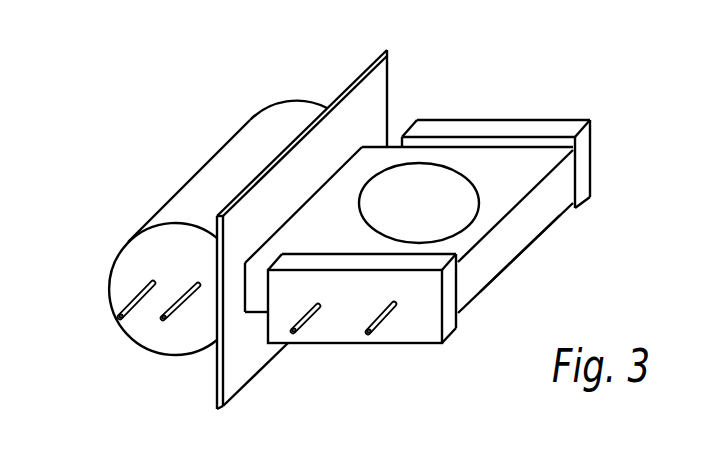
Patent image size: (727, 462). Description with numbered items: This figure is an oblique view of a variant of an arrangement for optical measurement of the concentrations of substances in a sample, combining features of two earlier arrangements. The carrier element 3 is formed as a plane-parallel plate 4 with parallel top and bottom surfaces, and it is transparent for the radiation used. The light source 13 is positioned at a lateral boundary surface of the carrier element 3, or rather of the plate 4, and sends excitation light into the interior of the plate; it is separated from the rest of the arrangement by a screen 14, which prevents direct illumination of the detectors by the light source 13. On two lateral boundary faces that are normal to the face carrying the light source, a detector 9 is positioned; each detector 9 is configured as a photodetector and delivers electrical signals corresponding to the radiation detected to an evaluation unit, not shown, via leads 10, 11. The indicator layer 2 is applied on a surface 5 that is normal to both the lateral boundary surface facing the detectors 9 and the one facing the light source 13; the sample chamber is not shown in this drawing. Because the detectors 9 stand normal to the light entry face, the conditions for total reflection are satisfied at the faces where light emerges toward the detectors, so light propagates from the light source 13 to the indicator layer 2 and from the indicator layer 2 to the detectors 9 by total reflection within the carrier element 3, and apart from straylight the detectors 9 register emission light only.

The indicator layer 2 is at (468, 191).
The carrier element 3 is at (492, 290).
The plate 4 is at (508, 248).
The surface 5 is at (360, 163).
The detector 9 is at (517, 128).
The lead 10 is at (310, 322).
The lead 11 is at (383, 330).
The light source 13 is at (188, 205).
The screen 14 is at (233, 380).